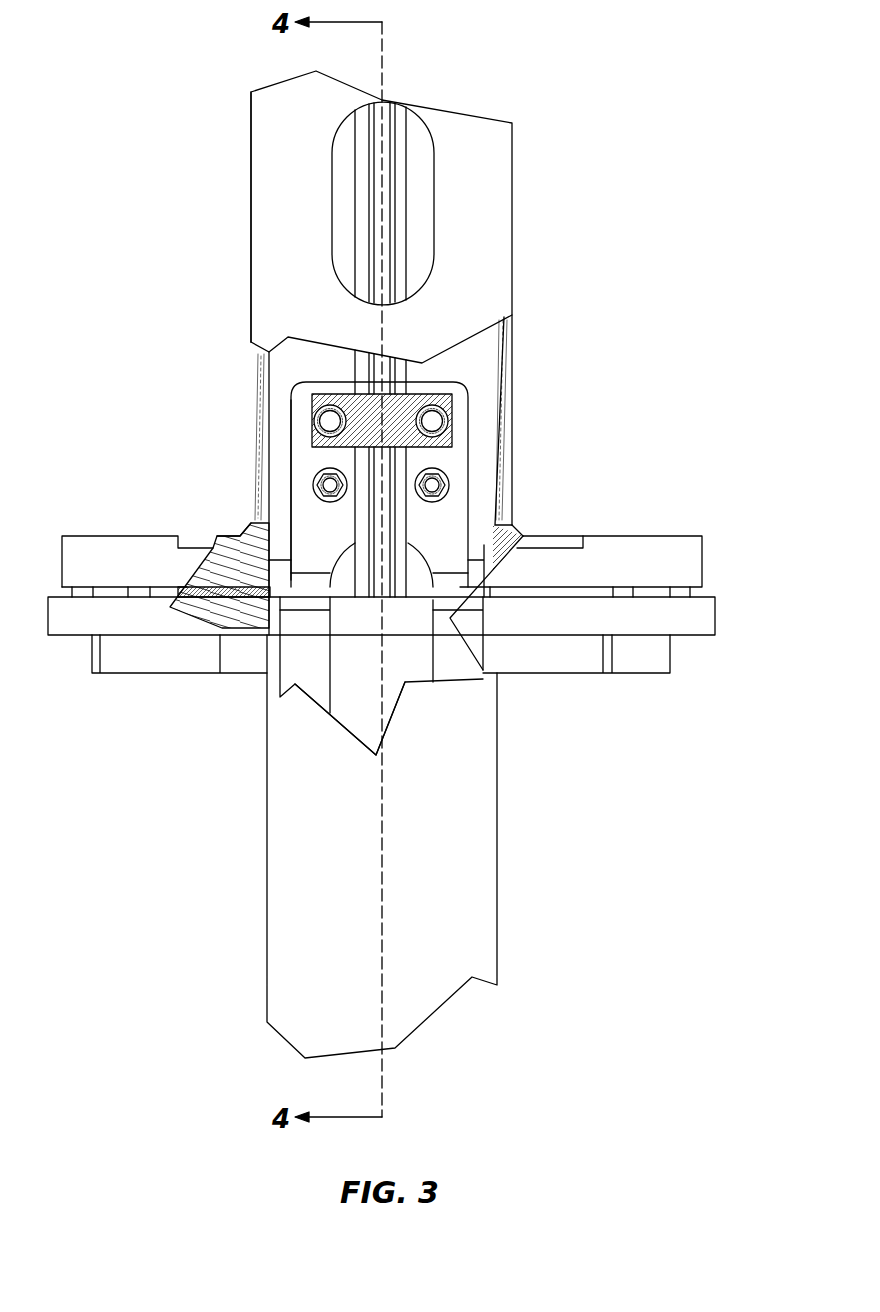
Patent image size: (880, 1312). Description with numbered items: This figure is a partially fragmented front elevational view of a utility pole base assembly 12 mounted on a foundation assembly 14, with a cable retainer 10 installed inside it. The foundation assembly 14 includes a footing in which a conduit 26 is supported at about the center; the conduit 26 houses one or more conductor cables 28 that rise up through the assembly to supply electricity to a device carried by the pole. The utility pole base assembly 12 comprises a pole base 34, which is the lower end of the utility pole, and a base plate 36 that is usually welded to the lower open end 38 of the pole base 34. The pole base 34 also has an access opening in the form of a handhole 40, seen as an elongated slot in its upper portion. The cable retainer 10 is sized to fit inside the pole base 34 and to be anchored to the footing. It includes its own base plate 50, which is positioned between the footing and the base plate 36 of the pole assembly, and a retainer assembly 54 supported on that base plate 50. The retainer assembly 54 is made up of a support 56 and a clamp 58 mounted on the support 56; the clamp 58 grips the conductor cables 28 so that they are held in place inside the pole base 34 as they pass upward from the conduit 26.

The cable retainer 10 is at (463, 506).
The utility pole base assembly 12 is at (517, 242).
The foundation assembly 14 is at (507, 840).
The conduit 26 is at (353, 712).
The conductor cable 28 is at (345, 514).
The pole base 34 is at (258, 263).
The base plate 36 is at (88, 535).
The lower open end 38 is at (505, 512).
The handhole 40 is at (336, 186).
The base plate 50 is at (190, 583).
The retainer assembly 54 is at (463, 405).
The support 56 is at (305, 457).
The clamp 58 is at (412, 400).